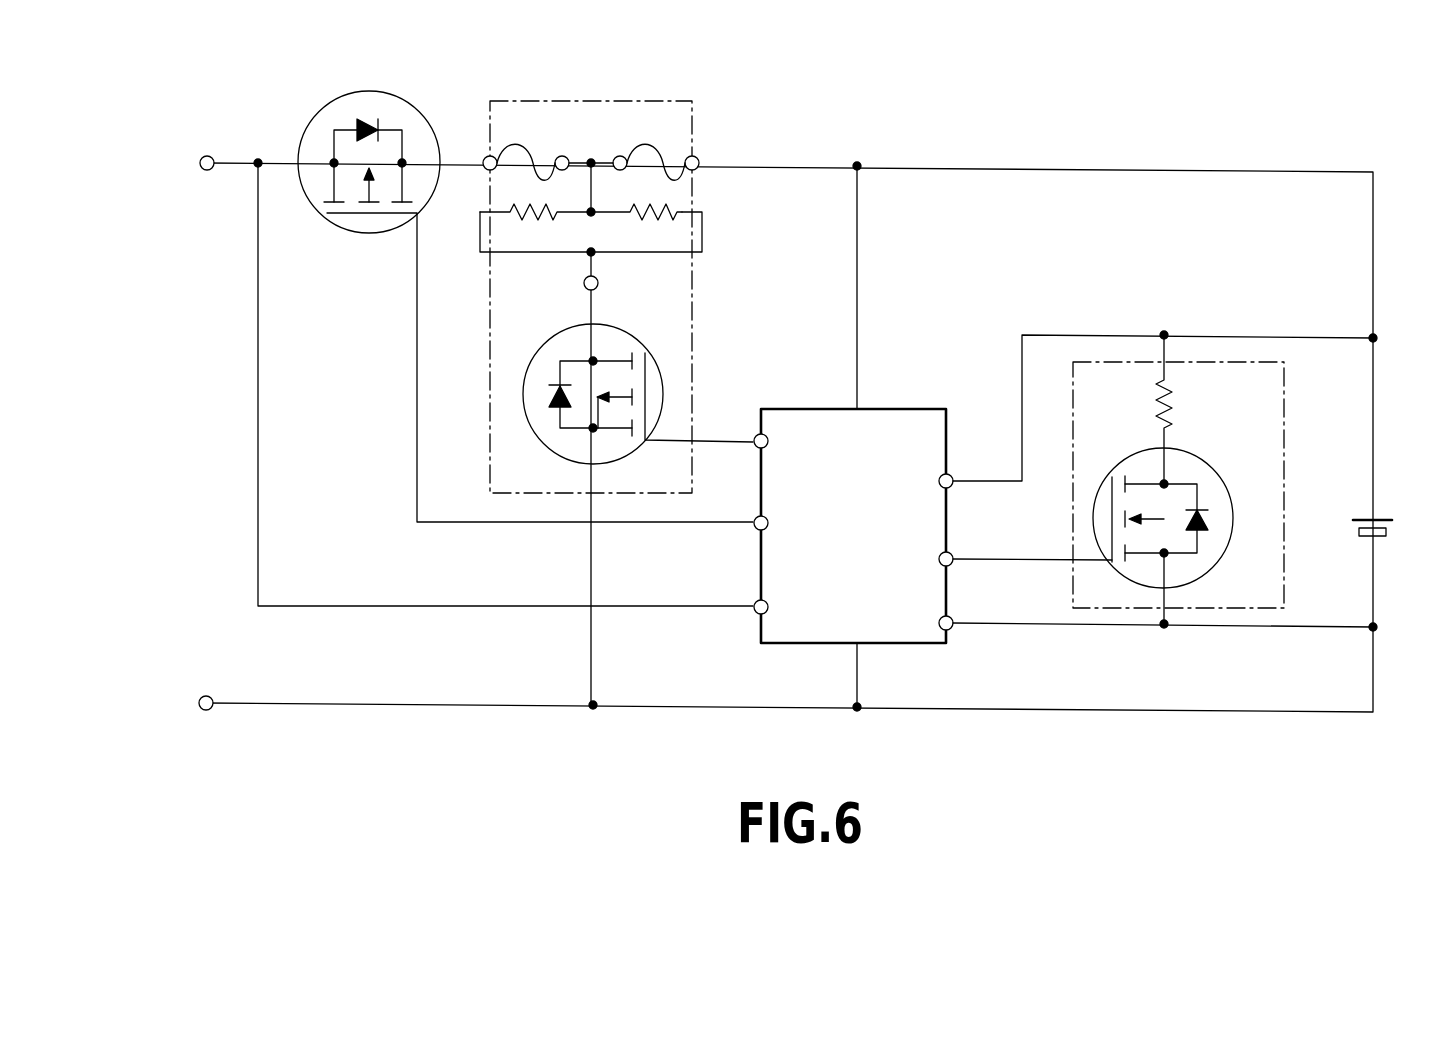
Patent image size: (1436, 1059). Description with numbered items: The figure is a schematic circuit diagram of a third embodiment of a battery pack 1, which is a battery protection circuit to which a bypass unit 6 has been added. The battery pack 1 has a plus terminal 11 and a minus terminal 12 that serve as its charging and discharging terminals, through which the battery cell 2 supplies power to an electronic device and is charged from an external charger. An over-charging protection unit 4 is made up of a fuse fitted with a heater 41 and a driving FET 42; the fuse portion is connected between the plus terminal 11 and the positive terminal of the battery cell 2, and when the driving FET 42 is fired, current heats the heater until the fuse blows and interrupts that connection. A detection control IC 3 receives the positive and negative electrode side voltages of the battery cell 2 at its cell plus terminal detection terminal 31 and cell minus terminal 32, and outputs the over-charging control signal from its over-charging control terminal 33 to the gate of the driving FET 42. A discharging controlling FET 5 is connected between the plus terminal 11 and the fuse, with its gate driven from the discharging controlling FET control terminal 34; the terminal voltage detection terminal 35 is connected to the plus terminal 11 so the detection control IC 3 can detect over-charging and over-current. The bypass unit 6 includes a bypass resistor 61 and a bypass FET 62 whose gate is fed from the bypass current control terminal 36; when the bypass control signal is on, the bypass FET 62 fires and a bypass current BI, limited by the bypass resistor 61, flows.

The battery pack 1 is at (766, 141).
The battery cell 2 is at (1386, 515).
The detection control IC 3 is at (1022, 436).
The over-charging protection unit 4 is at (616, 368).
The discharging controlling FET 5 is at (391, 93).
The bypass unit 6 is at (1225, 481).
The plus terminal 11 is at (206, 155).
The minus terminal 12 is at (206, 695).
The cell plus terminal detection terminal 31 is at (953, 474).
The cell minus terminal 32 is at (951, 629).
The over-charging control terminal 33 is at (754, 436).
The discharging controlling FET control terminal 34 is at (755, 529).
The terminal voltage detection terminal 35 is at (755, 613).
The bypass current control terminal 36 is at (954, 553).
The fuse fitted with a heater 41 is at (539, 146).
The driving FET 42 is at (639, 343).
The bypass resistor 61 is at (1176, 392).
The bypass FET 62 is at (1221, 476).
The bypass current BI is at (1170, 601).